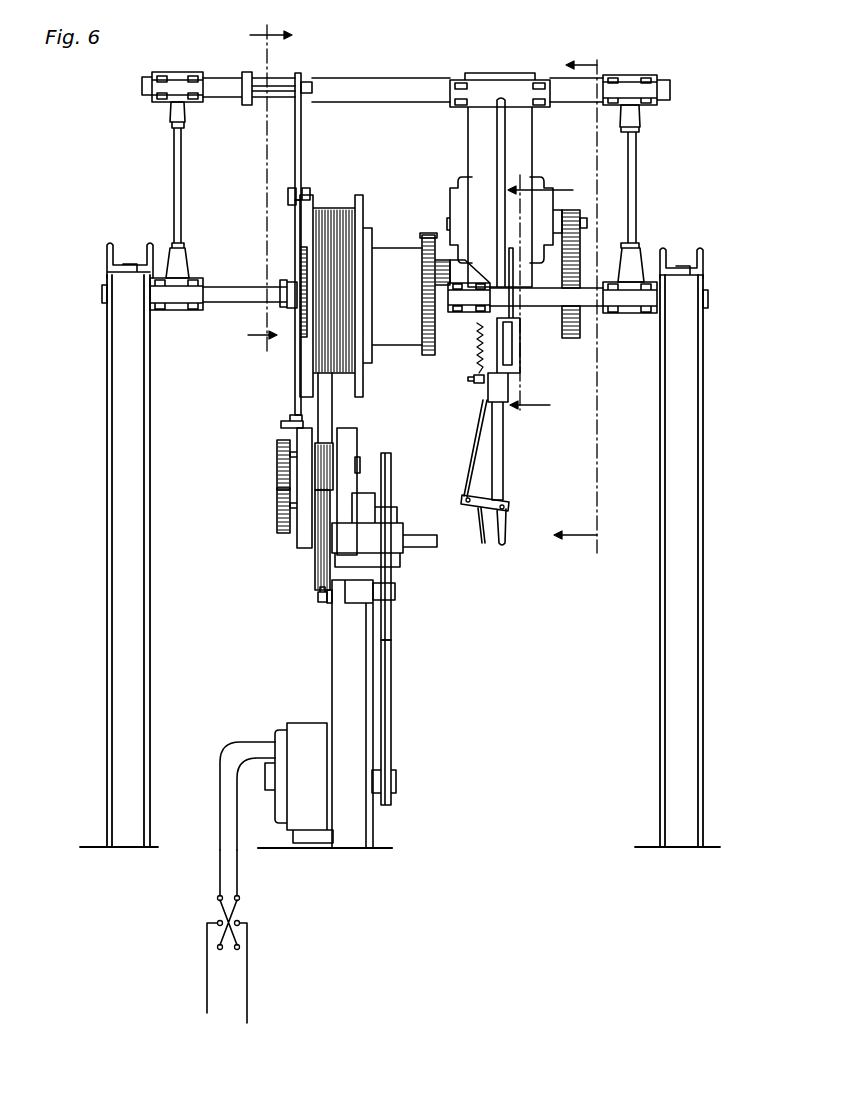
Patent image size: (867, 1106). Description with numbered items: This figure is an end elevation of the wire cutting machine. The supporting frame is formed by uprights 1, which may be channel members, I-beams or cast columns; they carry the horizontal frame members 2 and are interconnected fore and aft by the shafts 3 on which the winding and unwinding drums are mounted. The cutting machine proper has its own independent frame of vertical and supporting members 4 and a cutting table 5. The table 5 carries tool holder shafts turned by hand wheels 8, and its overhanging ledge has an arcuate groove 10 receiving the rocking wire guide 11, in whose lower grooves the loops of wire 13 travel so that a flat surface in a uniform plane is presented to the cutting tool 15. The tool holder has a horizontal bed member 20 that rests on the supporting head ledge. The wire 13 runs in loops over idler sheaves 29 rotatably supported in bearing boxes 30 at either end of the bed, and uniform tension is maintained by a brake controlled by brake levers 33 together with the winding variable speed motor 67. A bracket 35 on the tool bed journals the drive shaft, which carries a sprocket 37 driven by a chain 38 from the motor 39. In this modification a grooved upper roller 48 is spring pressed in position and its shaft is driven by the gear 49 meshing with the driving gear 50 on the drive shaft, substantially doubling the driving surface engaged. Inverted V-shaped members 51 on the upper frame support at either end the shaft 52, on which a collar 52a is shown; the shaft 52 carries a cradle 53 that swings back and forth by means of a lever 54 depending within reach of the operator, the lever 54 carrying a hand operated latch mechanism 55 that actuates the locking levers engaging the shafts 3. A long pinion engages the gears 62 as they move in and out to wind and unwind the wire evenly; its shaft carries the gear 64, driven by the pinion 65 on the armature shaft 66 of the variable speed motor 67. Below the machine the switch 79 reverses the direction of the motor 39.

The uprights 1 is at (135, 594).
The horizontal frame members 2 is at (107, 261).
The shafts 3 is at (588, 306).
The vertical and supporting members 4 is at (352, 673).
The cutting table 5 is at (330, 598).
The hand wheels 8 is at (396, 591).
The arcuate groove 10 is at (591, 297).
The rocking wire guide 11 is at (527, 407).
The wire 13 is at (318, 412).
The cutting tool 15 is at (277, 183).
The horizontal bed member 20 is at (317, 597).
The idler sheaves 29 is at (316, 580).
The bearing boxes 30 is at (396, 530).
The brake levers 33 is at (294, 384).
The bracket 35 is at (350, 453).
The sprocket 37 is at (392, 463).
The chain 38 is at (392, 627).
The motor 39 is at (305, 735).
The grooved upper roller 48 is at (337, 448).
The gear 49 is at (280, 453).
The driving gear 50 is at (277, 506).
The inverted V-shaped members 51 is at (173, 181).
The shaft 52 is at (386, 88).
The collar 52a is at (288, 80).
The cradle 53 is at (520, 130).
The lever 54 is at (503, 424).
The hand operated latch mechanism 55 is at (476, 513).
The gears 62 is at (428, 233).
The gear 64 is at (579, 256).
The pinion 65 is at (575, 211).
The armature shaft 66 is at (585, 222).
The variable speed motor 67 is at (543, 180).
The switch 79 is at (304, 110).